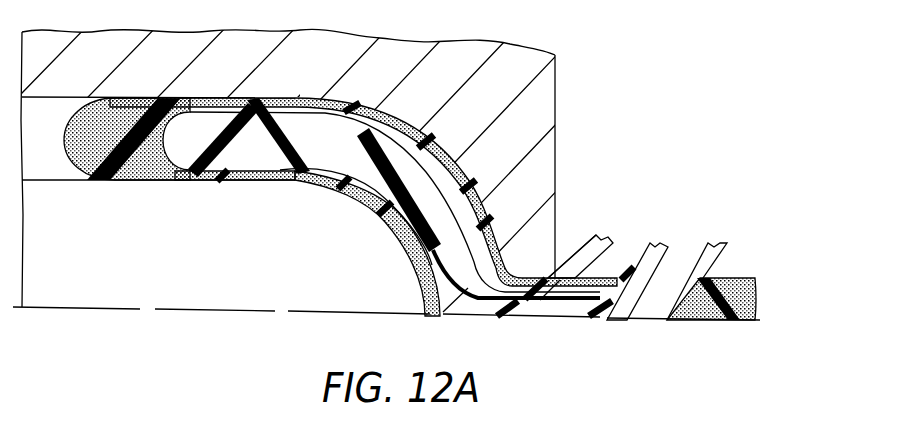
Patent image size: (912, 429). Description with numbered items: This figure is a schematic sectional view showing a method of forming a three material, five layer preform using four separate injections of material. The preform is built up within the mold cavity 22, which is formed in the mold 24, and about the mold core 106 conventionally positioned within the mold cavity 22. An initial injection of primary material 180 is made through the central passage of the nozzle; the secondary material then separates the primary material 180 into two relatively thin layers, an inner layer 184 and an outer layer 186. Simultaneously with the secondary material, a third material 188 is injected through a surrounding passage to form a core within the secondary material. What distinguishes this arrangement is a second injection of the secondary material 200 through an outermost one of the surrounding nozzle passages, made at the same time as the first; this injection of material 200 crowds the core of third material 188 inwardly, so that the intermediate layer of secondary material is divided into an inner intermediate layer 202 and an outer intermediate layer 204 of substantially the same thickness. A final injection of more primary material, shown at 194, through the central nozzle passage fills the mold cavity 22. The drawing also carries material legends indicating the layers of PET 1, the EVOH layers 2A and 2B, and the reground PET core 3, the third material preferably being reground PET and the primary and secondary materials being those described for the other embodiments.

The PET layer 1 is at (770, 321).
The EVOH barrier layer 2A is at (603, 235).
The EVOH barrier layer 2B is at (720, 243).
The PET RG layer 3 is at (663, 235).
The mold cavity 22 is at (58, 163).
The mold 24 is at (556, 89).
The mold core 106 is at (208, 293).
The primary material 180 is at (137, 173).
The inner layer 184 is at (347, 197).
The outer layer 186 is at (427, 141).
The third material 188 is at (403, 233).
The final injection of primary material 194 is at (752, 300).
The second injection of secondary material 200 is at (580, 248).
The inner intermediate layer 202 is at (313, 167).
The outer intermediate layer 204 is at (377, 110).